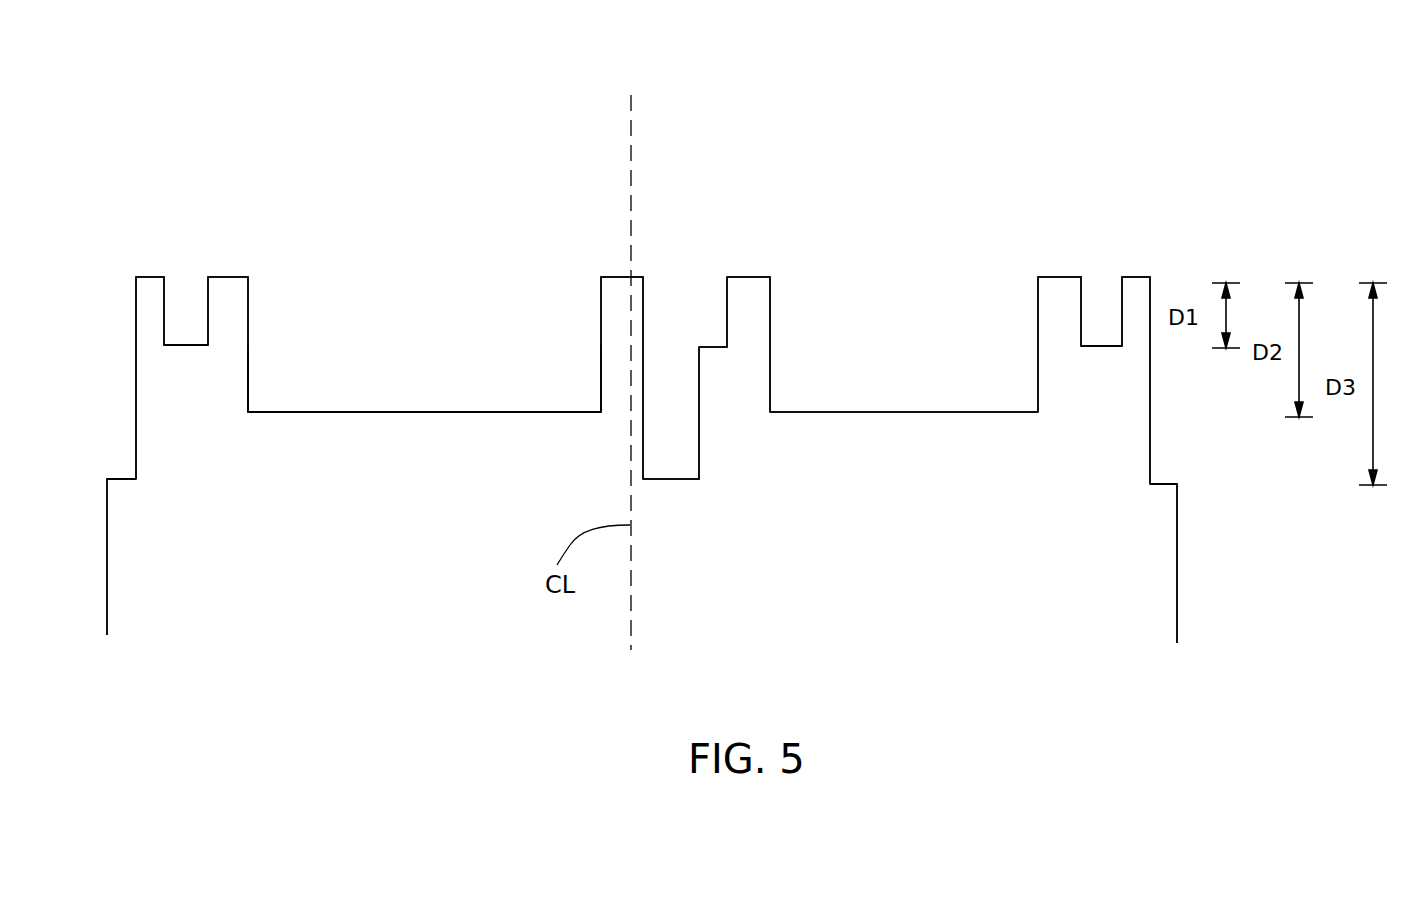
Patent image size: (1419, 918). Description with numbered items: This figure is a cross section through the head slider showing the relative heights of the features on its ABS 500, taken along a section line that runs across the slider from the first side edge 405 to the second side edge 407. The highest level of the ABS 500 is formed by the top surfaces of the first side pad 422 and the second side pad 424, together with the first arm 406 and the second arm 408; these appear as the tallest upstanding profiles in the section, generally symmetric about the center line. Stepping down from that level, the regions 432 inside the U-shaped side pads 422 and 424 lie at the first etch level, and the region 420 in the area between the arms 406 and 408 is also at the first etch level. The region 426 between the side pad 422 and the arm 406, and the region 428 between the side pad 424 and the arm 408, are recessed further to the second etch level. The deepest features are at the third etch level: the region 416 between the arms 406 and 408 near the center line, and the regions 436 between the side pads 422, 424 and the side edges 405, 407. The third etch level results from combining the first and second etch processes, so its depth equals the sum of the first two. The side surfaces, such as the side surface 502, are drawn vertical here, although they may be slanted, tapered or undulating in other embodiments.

The ABS 500 is at (683, 80).
The first side edge 405 is at (108, 556).
The second side edge 407 is at (1177, 563).
The first arm 406 is at (622, 277).
The second arm 408 is at (750, 277).
The region 416 is at (672, 481).
The region 420 is at (713, 348).
The first side pad 422 is at (152, 277).
The second side pad 424 is at (1134, 277).
The region 426 is at (425, 412).
The region 428 is at (992, 412).
The regions 432 is at (185, 345).
The regions 436 is at (127, 481).
The side surface 502 is at (601, 345).